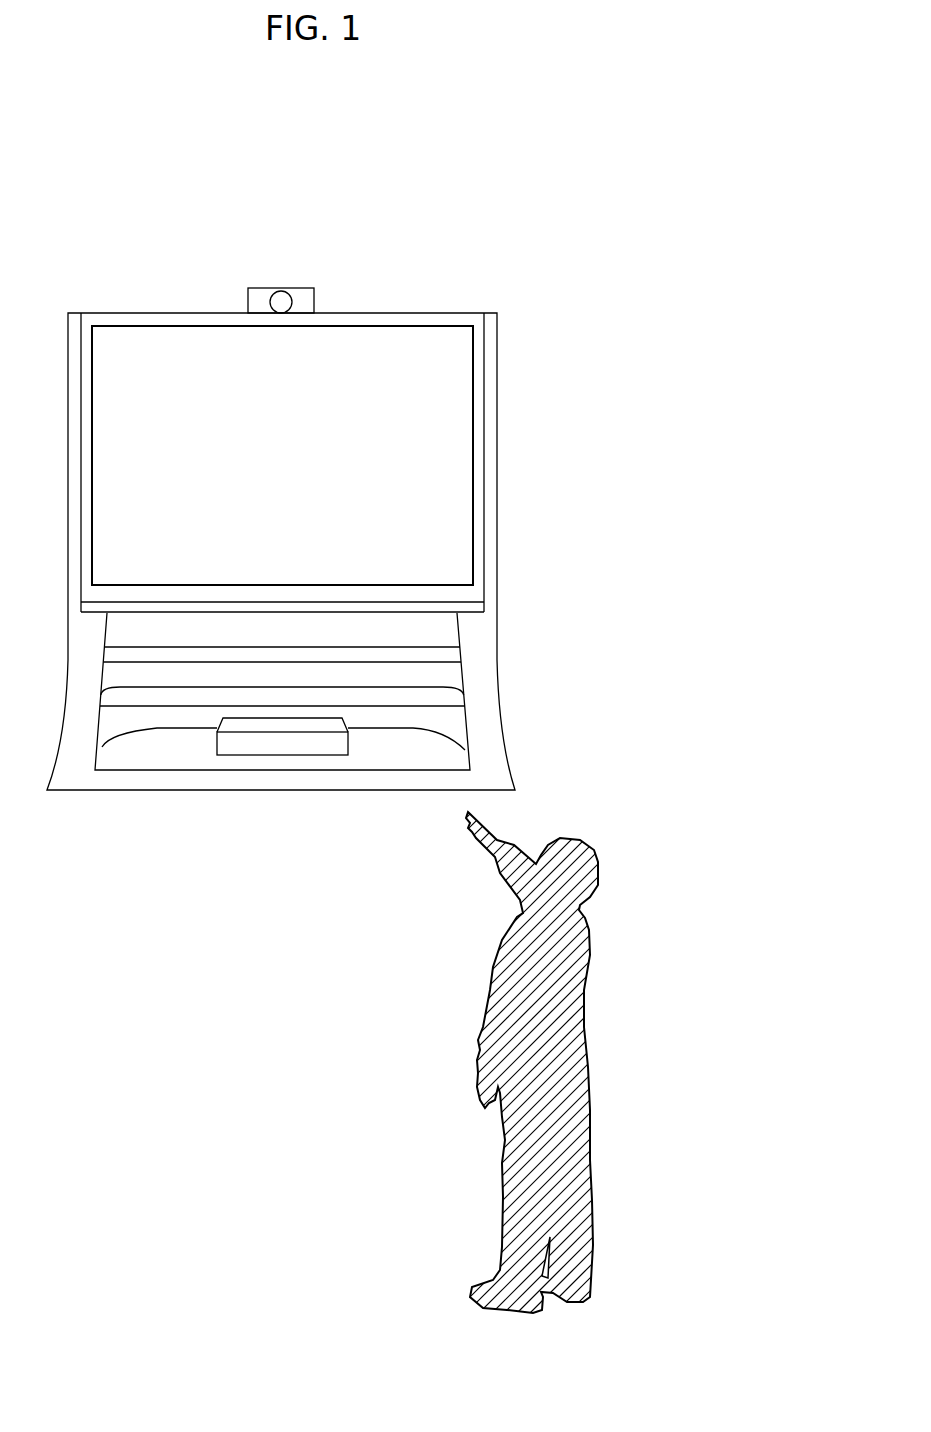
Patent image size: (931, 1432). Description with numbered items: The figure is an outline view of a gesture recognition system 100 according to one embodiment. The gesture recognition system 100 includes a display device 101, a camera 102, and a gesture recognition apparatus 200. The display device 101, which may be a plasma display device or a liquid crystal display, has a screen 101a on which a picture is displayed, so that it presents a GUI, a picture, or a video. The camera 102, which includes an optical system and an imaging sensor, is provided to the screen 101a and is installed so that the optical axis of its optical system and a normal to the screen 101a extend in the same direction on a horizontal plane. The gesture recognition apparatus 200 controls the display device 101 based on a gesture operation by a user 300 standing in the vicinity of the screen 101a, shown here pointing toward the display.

The gesture recognition system 100 is at (533, 255).
The display device 101 is at (104, 309).
The screen 101a is at (400, 345).
The camera 102 is at (283, 289).
The gesture recognition apparatus 200 is at (225, 742).
The user 300 is at (492, 978).